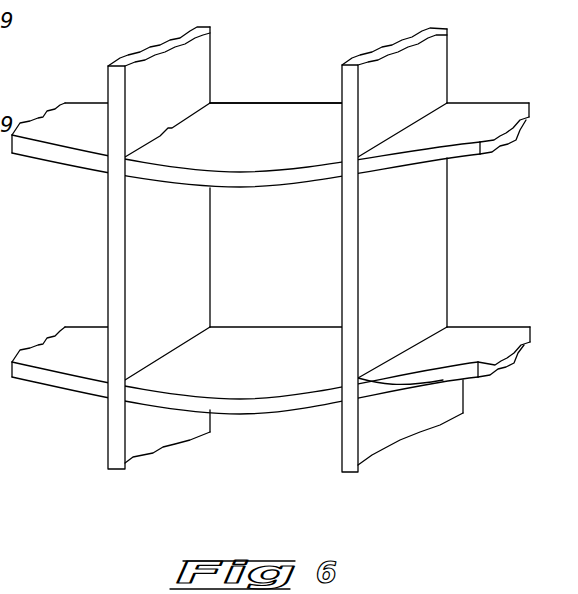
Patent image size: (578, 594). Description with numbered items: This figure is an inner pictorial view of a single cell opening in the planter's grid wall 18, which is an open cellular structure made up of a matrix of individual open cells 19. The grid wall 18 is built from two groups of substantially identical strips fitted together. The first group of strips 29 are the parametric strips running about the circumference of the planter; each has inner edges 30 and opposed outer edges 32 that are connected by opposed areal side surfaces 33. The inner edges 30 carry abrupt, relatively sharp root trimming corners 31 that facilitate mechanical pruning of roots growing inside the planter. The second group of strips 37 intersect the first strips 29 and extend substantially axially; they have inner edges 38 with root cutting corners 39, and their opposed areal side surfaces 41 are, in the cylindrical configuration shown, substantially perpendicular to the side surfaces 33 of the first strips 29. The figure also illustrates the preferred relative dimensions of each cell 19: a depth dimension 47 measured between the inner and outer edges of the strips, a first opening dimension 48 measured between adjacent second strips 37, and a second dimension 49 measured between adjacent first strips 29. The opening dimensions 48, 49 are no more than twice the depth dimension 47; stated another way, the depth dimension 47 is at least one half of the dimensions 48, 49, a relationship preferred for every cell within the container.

The grid wall 18 is at (448, 60).
The open cell 19 is at (296, 200).
The first group of strips 29 is at (515, 126).
The inner edges 30 is at (50, 373).
The root trimming corners 31 is at (443, 380).
The outer edges 32 is at (506, 327).
The side surfaces 33 is at (270, 233).
The second group of strips 37 is at (160, 447).
The inner edges 38 is at (117, 272).
The root cutting corners 39 is at (228, 272).
The side surfaces 41 is at (291, 177).
The depth dimension 47 is at (209, 283).
The first opening dimension 48 is at (342, 432).
The second dimension 49 is at (468, 155).